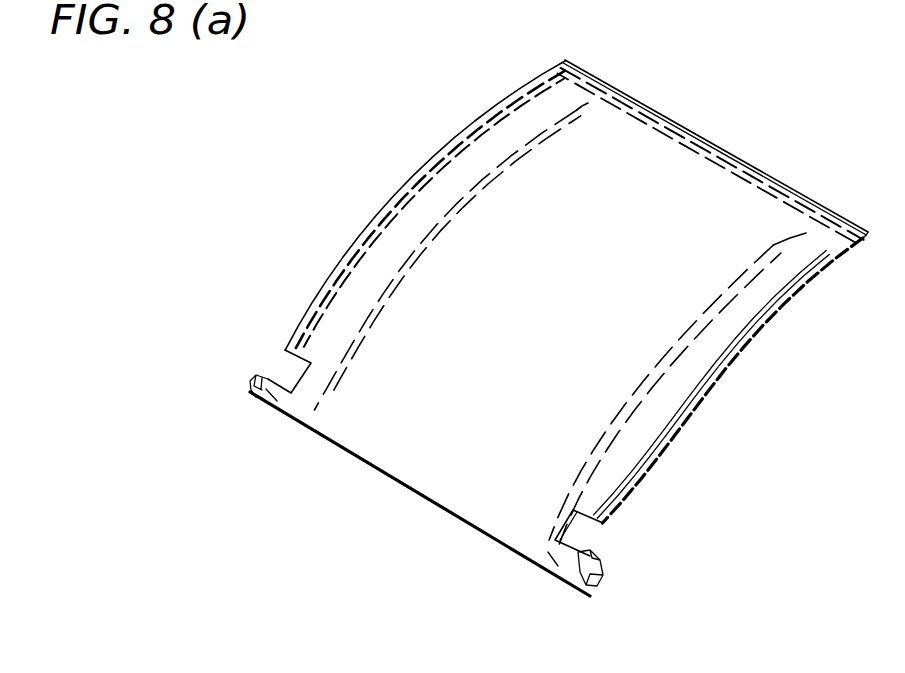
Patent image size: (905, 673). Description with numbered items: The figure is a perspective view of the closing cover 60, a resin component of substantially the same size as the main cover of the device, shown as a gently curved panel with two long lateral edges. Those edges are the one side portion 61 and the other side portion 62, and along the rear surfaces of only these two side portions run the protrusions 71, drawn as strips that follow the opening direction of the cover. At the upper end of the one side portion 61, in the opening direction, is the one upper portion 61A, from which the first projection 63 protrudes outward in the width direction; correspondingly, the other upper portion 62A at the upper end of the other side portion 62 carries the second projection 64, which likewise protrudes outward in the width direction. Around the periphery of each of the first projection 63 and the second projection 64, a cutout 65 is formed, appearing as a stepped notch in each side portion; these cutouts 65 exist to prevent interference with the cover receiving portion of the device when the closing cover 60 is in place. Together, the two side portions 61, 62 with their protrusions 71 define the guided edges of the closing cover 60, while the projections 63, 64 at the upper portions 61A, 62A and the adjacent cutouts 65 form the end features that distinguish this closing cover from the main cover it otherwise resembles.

The closing cover 60 is at (246, 221).
The one side portion 61 is at (390, 204).
The one upper portion 61A is at (273, 396).
The other side portion 62 is at (676, 389).
The other upper portion 62A is at (552, 554).
The first projection 63 is at (254, 383).
The second projection 64 is at (585, 584).
The cutout 65 is at (264, 356).
The protrusion 71 is at (441, 150).